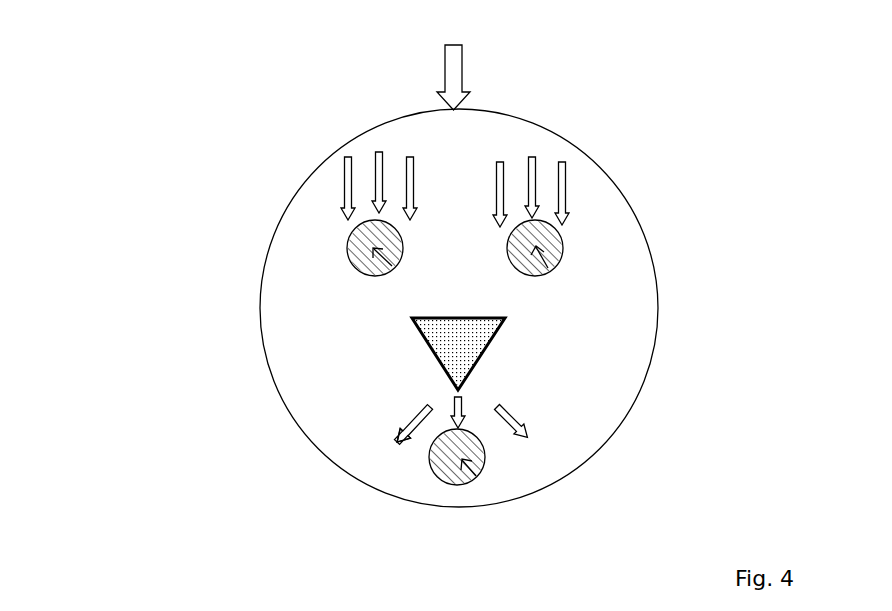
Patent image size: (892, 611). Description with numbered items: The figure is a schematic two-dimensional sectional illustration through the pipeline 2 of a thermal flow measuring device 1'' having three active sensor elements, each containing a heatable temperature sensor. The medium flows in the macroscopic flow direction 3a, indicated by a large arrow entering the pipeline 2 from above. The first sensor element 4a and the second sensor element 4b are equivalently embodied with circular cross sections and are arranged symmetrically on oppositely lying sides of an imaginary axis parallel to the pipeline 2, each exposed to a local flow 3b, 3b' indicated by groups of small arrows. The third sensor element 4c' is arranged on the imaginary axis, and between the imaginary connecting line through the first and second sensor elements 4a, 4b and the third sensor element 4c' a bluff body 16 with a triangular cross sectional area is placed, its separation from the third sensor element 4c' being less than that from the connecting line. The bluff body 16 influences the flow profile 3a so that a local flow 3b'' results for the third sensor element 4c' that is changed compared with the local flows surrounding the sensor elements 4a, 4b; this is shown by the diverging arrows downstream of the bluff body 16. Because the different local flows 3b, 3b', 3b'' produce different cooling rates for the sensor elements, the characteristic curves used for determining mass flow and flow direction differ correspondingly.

The thermal flow measuring device 1'' is at (153, 127).
The pipeline 2 is at (312, 470).
The macroscopic flow direction 3a is at (437, 63).
The first position / local flow 3b is at (353, 197).
The second position / local flow 3b' is at (515, 191).
The local flow 3b'' is at (429, 421).
The first sensor element 4a is at (432, 274).
The second sensor element 4b is at (588, 292).
The third sensor element 4c' is at (494, 457).
The bluff body 16 is at (480, 368).